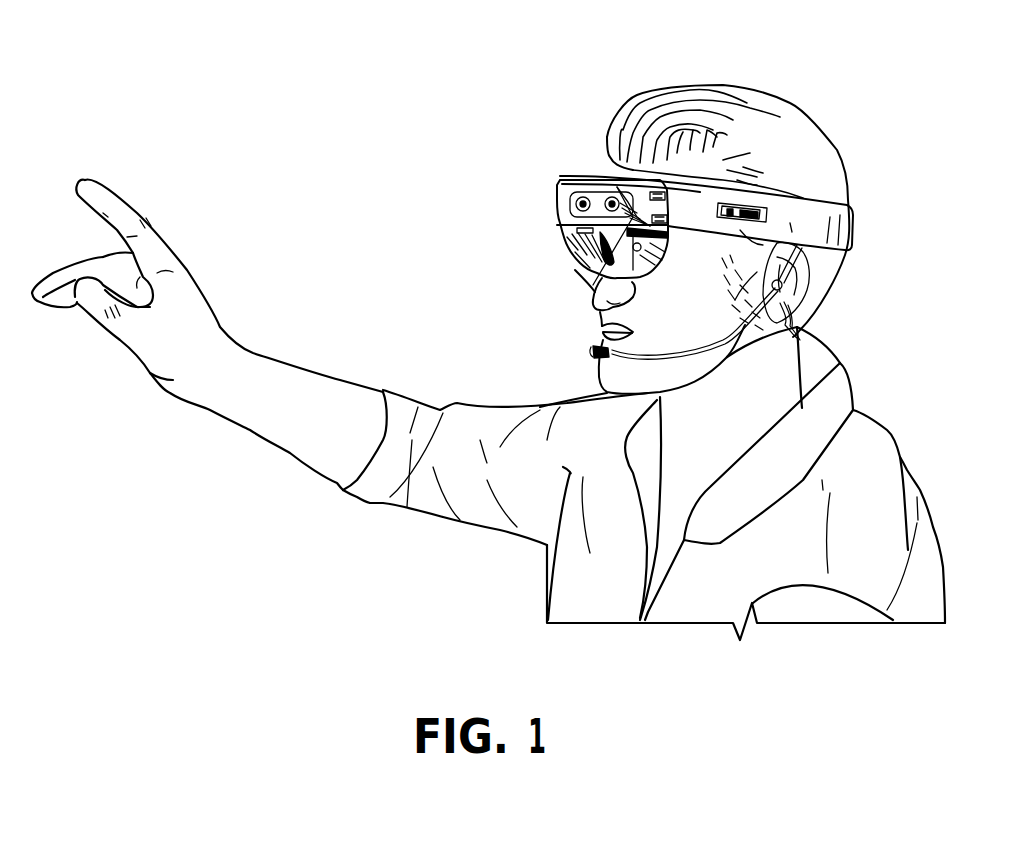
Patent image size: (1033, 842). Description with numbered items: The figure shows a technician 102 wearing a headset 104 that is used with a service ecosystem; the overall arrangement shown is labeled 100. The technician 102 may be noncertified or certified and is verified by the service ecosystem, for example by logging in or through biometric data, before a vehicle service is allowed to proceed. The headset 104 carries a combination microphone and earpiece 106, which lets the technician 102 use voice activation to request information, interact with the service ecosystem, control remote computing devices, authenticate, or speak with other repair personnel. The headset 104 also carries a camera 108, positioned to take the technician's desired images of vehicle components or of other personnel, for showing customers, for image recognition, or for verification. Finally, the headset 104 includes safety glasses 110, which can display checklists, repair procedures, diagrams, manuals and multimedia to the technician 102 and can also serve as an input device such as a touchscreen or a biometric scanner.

The environment / user with head-mounted display system 100 is at (488, 362).
The technician 102 is at (698, 236).
The headset 104 is at (557, 210).
The combination microphone and earpiece 106 is at (592, 352).
The camera 108 is at (763, 218).
The safety glasses 110 is at (570, 250).